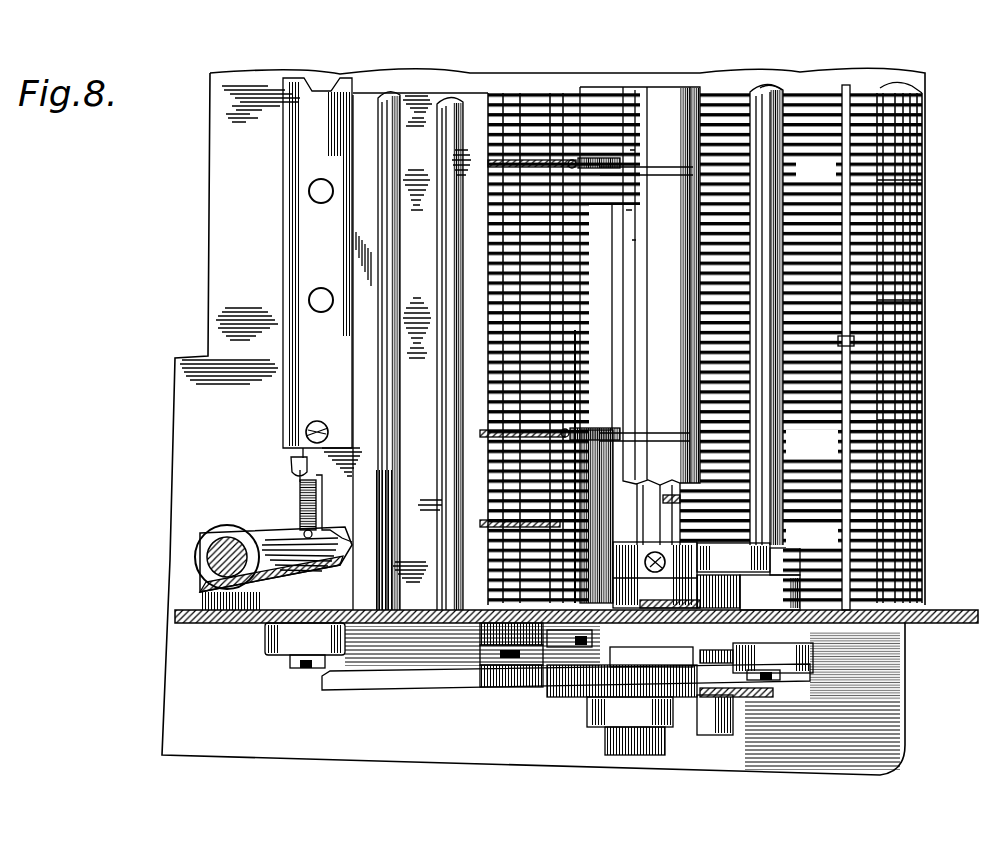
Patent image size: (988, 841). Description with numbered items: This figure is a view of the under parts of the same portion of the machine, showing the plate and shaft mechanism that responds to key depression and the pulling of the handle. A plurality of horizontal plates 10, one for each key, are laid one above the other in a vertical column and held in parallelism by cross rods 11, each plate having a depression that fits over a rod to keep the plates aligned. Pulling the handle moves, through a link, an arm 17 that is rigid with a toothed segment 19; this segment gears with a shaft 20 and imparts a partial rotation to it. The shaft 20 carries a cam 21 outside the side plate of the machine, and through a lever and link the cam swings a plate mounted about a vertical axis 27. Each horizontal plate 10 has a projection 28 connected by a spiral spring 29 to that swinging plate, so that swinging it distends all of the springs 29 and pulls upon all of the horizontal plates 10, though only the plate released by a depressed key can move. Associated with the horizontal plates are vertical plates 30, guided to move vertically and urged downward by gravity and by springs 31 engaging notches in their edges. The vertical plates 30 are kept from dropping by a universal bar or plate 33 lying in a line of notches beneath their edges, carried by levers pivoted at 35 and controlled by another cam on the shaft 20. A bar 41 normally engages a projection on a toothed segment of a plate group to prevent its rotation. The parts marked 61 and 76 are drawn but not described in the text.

The horizontal plates 10 is at (354, 270).
The cross rods 11 is at (440, 507).
The arm 17 is at (491, 714).
The toothed segment 19 is at (578, 700).
The shaft 20 is at (650, 526).
The cam 21 is at (630, 726).
The vertical axis 27 is at (222, 557).
The projection 28 is at (289, 466).
The spiral spring 29 is at (300, 500).
The vertical plates 30 is at (566, 380).
The springs 31 is at (783, 434).
The universal bar or plate 33 is at (627, 575).
The pivot 35 is at (775, 173).
The bar 41 is at (640, 286).
The collar 61 is at (716, 722).
The rod 76 is at (358, 688).